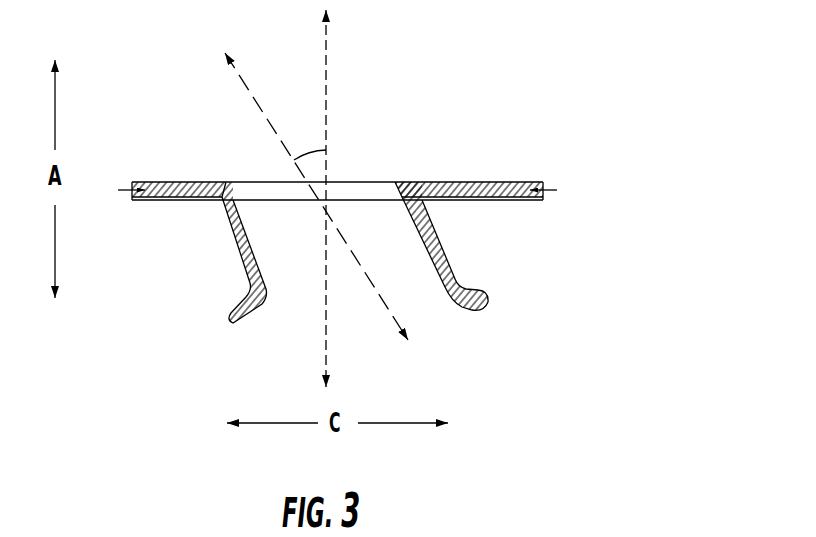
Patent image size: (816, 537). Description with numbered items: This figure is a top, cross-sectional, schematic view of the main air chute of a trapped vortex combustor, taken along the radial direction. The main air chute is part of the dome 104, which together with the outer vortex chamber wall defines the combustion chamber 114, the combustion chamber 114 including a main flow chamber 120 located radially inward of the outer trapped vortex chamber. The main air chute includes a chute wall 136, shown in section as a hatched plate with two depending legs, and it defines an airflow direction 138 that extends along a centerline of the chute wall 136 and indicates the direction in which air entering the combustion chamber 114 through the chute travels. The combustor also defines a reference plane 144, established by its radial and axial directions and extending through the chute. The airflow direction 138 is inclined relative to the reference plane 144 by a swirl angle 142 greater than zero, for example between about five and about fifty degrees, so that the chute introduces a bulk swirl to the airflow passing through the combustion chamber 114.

The dome 104 is at (162, 199).
The combustion chamber 114 is at (394, 181).
The main flow chamber 120 is at (394, 181).
The chute wall 136 is at (243, 262).
The airflow direction 138 is at (251, 96).
The swirl angle 142 is at (309, 148).
The reference plane 144 is at (327, 63).